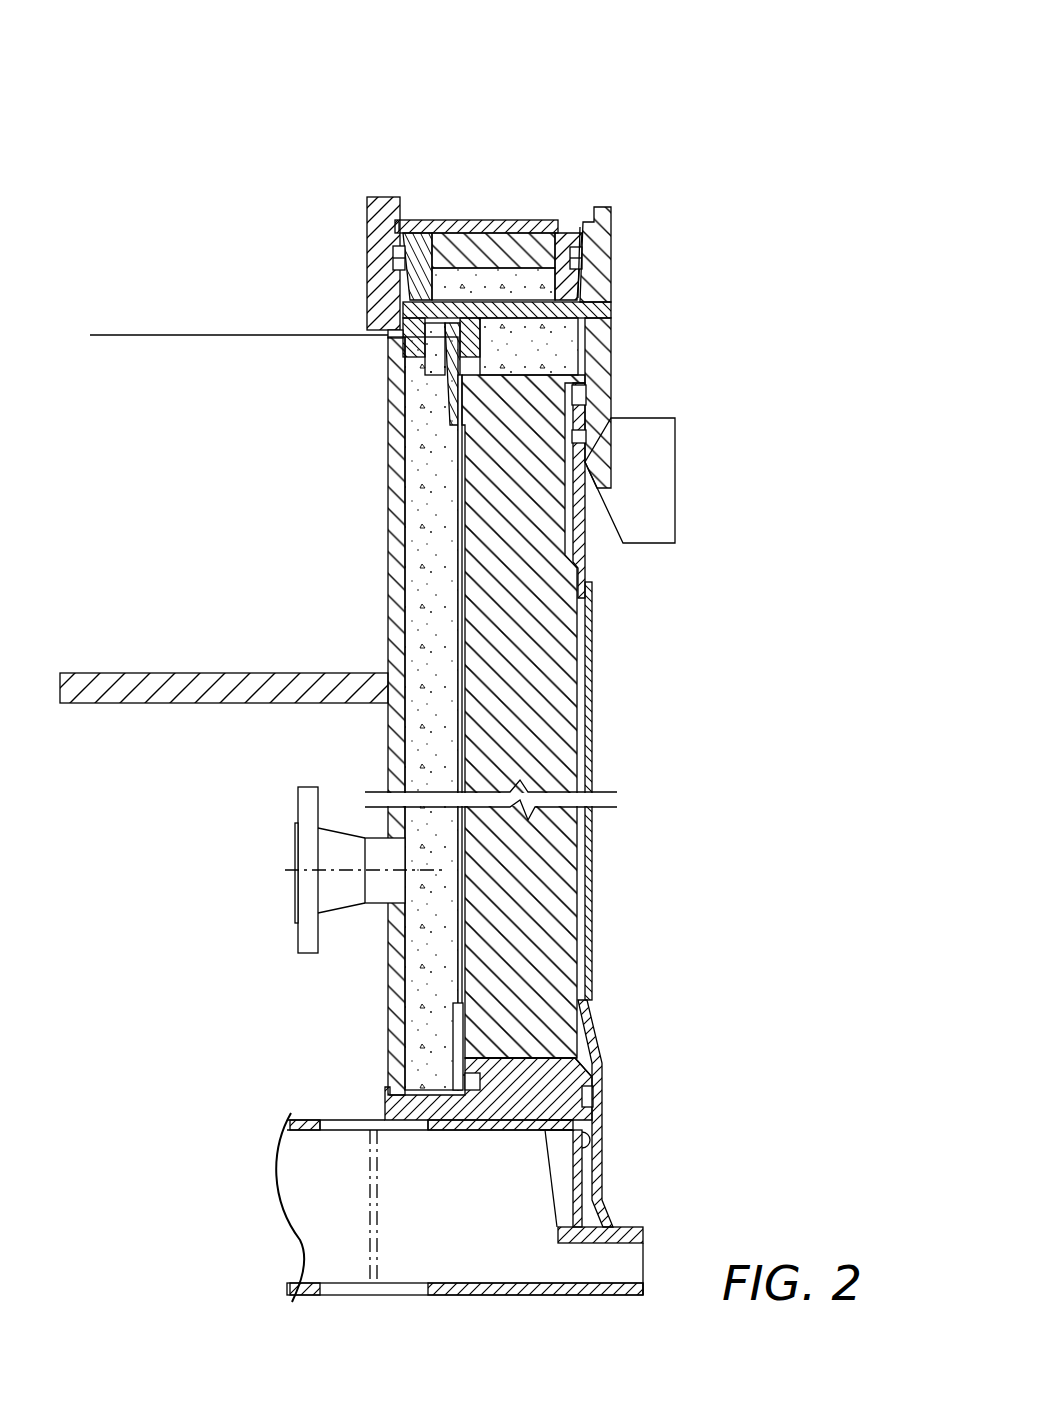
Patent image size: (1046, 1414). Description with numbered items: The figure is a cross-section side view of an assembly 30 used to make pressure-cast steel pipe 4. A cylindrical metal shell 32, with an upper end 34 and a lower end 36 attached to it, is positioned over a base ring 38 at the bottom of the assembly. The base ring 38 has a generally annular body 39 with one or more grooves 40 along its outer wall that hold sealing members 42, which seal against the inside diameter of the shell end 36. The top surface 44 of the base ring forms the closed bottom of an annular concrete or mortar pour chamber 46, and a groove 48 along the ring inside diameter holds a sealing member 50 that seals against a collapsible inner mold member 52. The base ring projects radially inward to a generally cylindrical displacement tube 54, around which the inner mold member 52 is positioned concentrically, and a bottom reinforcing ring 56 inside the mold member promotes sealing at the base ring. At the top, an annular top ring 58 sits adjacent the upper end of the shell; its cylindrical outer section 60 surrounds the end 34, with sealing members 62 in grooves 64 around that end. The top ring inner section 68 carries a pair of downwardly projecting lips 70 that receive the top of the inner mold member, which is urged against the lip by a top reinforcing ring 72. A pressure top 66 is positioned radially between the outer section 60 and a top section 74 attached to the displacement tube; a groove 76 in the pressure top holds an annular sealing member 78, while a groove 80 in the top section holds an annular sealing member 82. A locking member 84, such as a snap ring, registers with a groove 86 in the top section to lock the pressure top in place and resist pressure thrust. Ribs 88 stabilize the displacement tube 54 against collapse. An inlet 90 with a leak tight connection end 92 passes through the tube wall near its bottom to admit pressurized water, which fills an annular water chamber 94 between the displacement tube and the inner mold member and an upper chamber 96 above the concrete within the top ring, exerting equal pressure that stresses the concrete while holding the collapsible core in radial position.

The assembly 30 is at (708, 98).
The cylindrical metal shell 32 is at (596, 748).
The shell end 34 is at (584, 523).
The shell end 36 is at (596, 1097).
The base ring 38 is at (383, 1105).
The annular body 39 is at (500, 1132).
The pipe 4 is at (452, 1132).
The grooves 40 is at (590, 1140).
The sealing members 42 is at (601, 1085).
The top surface 44 is at (548, 1058).
The pour chamber 46 is at (540, 978).
The groove 48 is at (465, 1082).
The sealing member 50 is at (458, 1082).
The collapsible inner mold member 52 is at (458, 935).
The displacement tube 54 is at (386, 751).
The bottom reinforcing ring 56 is at (452, 1042).
The top ring 58 is at (616, 355).
The cylindrical outer section 60 is at (592, 312).
The sealing members 62 is at (588, 440).
The grooves 64 is at (600, 440).
The pressure top 66 is at (575, 220).
The inner section 68 is at (402, 342).
The downwardly projecting lips 70 is at (460, 340).
The top reinforcing ring 72 is at (450, 380).
The top section 74 is at (365, 262).
The groove 76 is at (583, 250).
The annular sealing member 78 is at (580, 258).
The groove 80 is at (405, 250).
The annular sealing member 82 is at (392, 265).
The locking member 84 is at (485, 219).
The groove 86 is at (409, 224).
The ribs 88 is at (125, 703).
The inlet 90 is at (349, 826).
The leak tight connection end 92 is at (310, 828).
The annular water chamber 94 is at (425, 640).
The upper chamber 96 is at (518, 332).